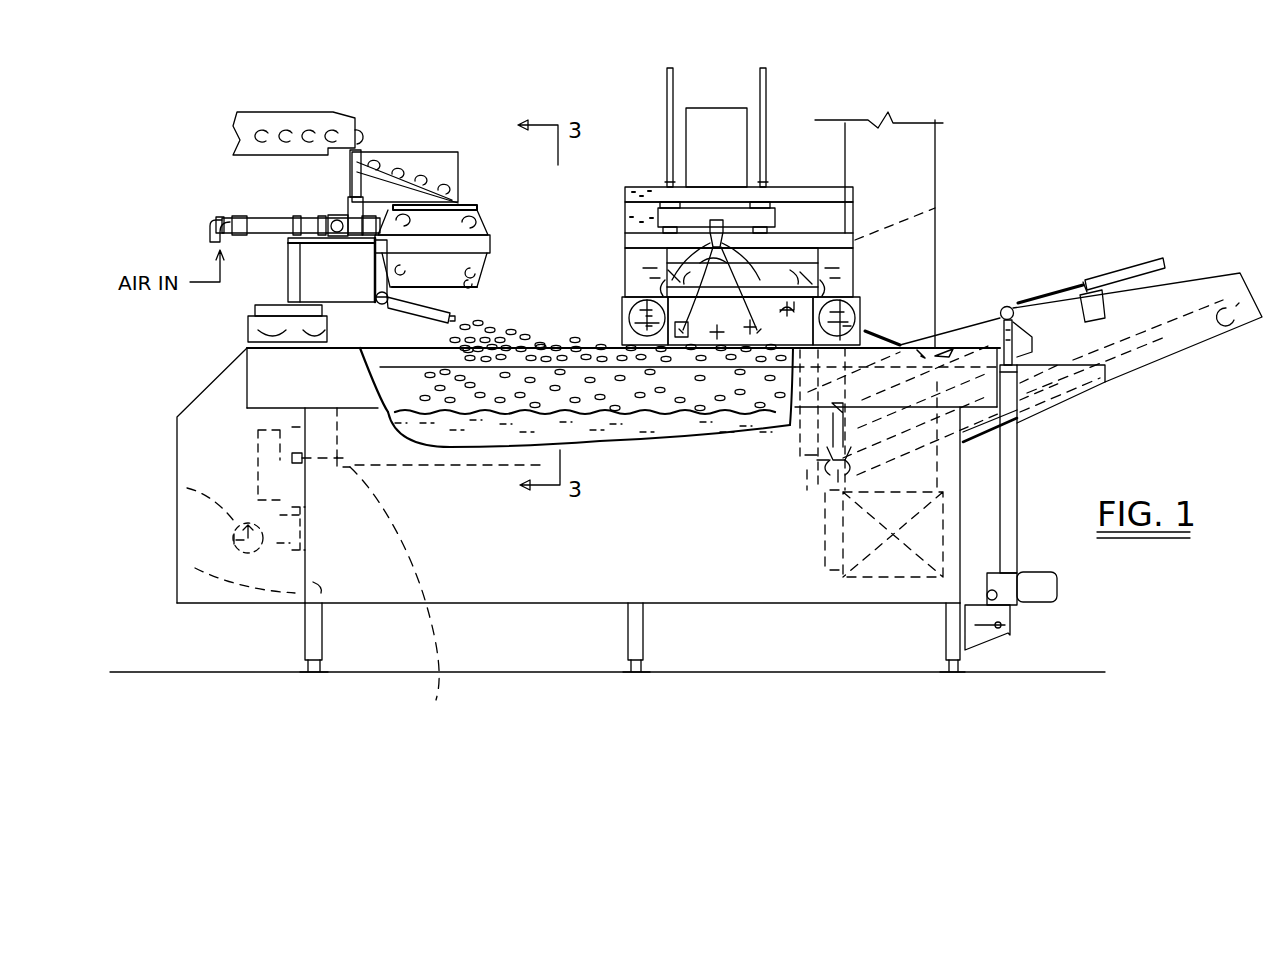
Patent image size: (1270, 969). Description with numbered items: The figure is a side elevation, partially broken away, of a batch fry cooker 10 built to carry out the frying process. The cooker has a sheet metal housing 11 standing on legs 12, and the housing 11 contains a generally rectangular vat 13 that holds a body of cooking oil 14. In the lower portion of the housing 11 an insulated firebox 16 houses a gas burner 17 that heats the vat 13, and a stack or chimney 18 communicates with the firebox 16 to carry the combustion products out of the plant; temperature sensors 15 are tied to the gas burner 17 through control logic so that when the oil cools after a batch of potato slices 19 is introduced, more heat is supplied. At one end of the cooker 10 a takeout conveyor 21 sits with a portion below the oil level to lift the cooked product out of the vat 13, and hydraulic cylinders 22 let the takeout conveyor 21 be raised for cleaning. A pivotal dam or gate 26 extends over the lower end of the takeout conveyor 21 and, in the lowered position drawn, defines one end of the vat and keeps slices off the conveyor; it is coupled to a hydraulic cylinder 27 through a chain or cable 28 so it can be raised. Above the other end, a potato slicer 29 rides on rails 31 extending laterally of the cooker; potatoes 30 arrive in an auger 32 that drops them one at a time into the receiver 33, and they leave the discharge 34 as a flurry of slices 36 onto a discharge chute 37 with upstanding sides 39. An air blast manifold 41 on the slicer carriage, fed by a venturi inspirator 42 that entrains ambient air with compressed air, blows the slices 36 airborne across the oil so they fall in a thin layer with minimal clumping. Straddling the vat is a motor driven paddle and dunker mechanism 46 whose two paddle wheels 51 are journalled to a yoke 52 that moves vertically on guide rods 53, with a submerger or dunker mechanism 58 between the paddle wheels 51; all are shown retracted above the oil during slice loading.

The batch fry cooker 10 is at (198, 395).
The sheet metal housing 11 is at (592, 560).
The legs 12 is at (322, 627).
The vat 13 is at (240, 348).
The cooking oil 14 is at (696, 441).
The temperature sensors 15 is at (433, 694).
The insulated firebox 16 is at (177, 568).
The gas burner 17 is at (177, 487).
The stack or chimney 18 is at (935, 170).
The potato slices 19 is at (603, 339).
The takeout conveyor 21 is at (1190, 315).
The hydraulic cylinders 22 is at (1017, 475).
The pivotal dam or gate 26 is at (905, 305).
The hydraulic cylinder 27 is at (1115, 265).
The chain or cable 28 is at (1005, 305).
The potato slicer 29 is at (480, 205).
The potatoes 30 is at (245, 134).
The rails 31 is at (292, 300).
The auger 32 is at (272, 109).
The receiver 33 is at (440, 150).
The discharge 34 is at (470, 290).
The slices 36 is at (567, 333).
The discharge chute 37 is at (380, 305).
The upstanding sides 39 is at (440, 320).
The air blast manifold 41 is at (337, 215).
The venturi inspirator 42 is at (238, 218).
The paddle and dunker mechanism 46 is at (628, 187).
The paddle wheels 51 is at (625, 295).
The yoke 52 is at (700, 108).
The guide rods 53 is at (768, 90).
The submerger or dunker mechanism 58 is at (720, 313).